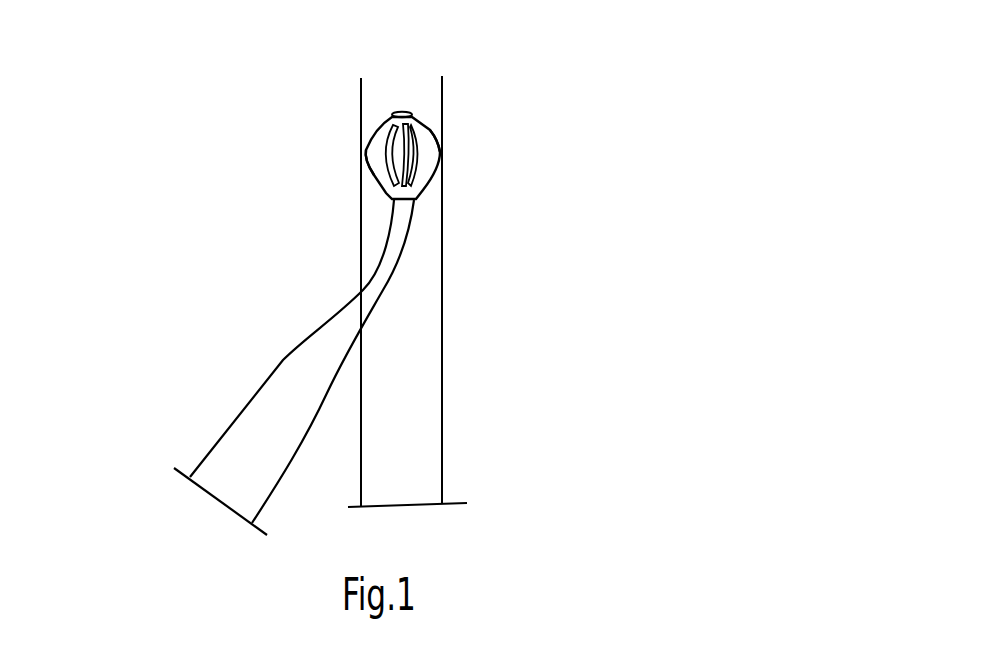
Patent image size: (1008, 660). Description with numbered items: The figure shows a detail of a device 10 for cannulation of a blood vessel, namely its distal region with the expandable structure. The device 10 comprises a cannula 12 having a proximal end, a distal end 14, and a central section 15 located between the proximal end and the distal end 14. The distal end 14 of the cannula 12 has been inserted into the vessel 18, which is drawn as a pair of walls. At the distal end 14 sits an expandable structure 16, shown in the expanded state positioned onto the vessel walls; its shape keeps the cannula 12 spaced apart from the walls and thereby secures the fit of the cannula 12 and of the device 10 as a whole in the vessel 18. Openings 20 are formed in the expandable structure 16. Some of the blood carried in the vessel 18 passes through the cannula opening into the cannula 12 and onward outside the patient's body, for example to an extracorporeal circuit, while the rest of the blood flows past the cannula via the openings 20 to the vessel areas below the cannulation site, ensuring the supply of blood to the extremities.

The device 10 is at (245, 310).
The cannula 12 is at (252, 393).
The distal end 14 is at (368, 179).
The central section 15 is at (342, 352).
The expandable structure 16 is at (363, 158).
The vessel 18 is at (422, 272).
The openings 20 is at (440, 145).